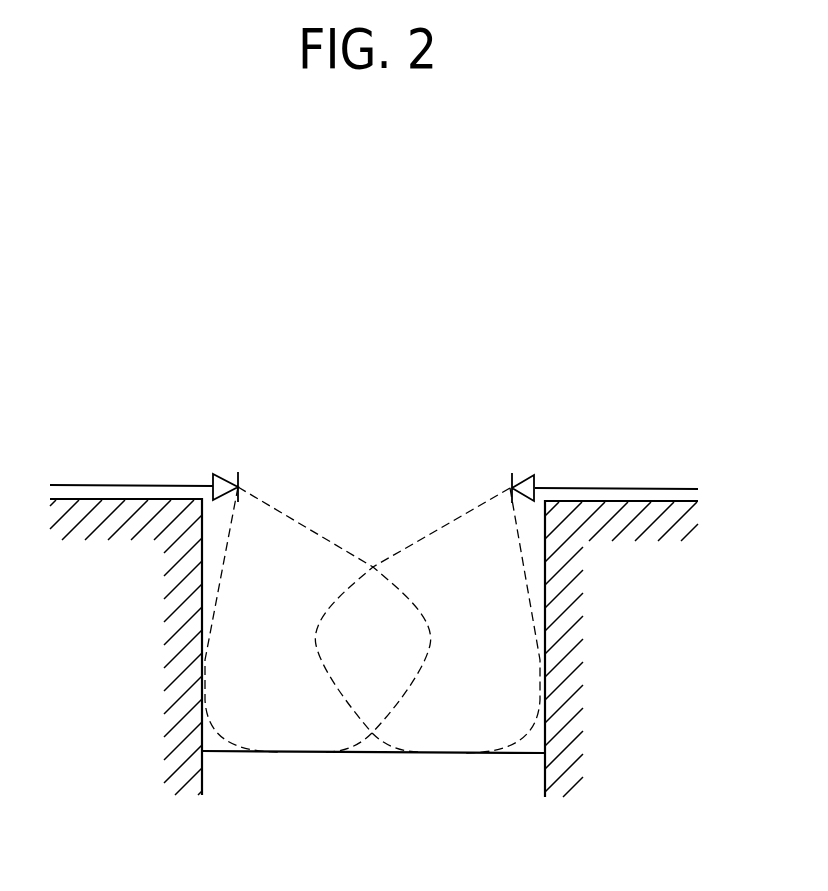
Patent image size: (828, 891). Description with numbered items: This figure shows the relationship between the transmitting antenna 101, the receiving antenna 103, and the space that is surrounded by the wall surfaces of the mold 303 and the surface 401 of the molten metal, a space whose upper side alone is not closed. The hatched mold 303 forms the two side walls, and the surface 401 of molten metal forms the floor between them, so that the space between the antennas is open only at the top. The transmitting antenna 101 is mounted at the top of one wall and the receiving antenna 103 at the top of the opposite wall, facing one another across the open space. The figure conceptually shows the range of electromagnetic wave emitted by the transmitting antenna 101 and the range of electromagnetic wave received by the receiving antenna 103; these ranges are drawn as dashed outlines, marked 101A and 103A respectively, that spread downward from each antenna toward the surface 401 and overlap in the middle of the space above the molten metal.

The transmitting antenna 101 is at (602, 488).
The receiving antenna 103 is at (138, 485).
The light emission range of first light-emitting element 101A is at (469, 708).
The light emission range of second light-emitting element 103A is at (288, 708).
The mold 303 is at (642, 528).
The surface of molten metal 401 is at (368, 752).